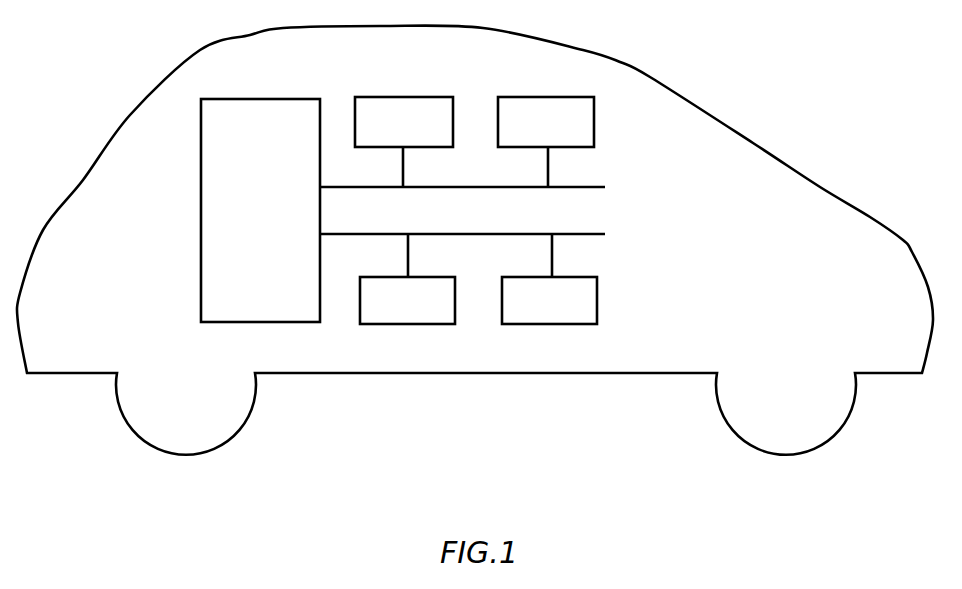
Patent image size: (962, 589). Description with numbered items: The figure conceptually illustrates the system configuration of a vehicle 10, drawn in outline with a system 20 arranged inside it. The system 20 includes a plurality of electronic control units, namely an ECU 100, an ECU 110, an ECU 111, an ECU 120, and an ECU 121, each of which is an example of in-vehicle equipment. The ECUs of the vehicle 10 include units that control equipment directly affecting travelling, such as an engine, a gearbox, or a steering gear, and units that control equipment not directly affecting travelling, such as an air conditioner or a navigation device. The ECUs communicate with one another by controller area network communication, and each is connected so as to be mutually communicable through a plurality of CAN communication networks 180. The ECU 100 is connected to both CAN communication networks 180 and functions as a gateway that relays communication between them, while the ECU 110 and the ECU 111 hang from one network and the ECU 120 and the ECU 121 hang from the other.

The vehicle 10 is at (652, 76).
The system 20 is at (642, 317).
The ECU 100 is at (252, 99).
The ECU 110 is at (408, 97).
The ECU 111 is at (545, 97).
The ECU 120 is at (422, 324).
The ECU 121 is at (550, 324).
The CAN communication network 180 is at (580, 187).